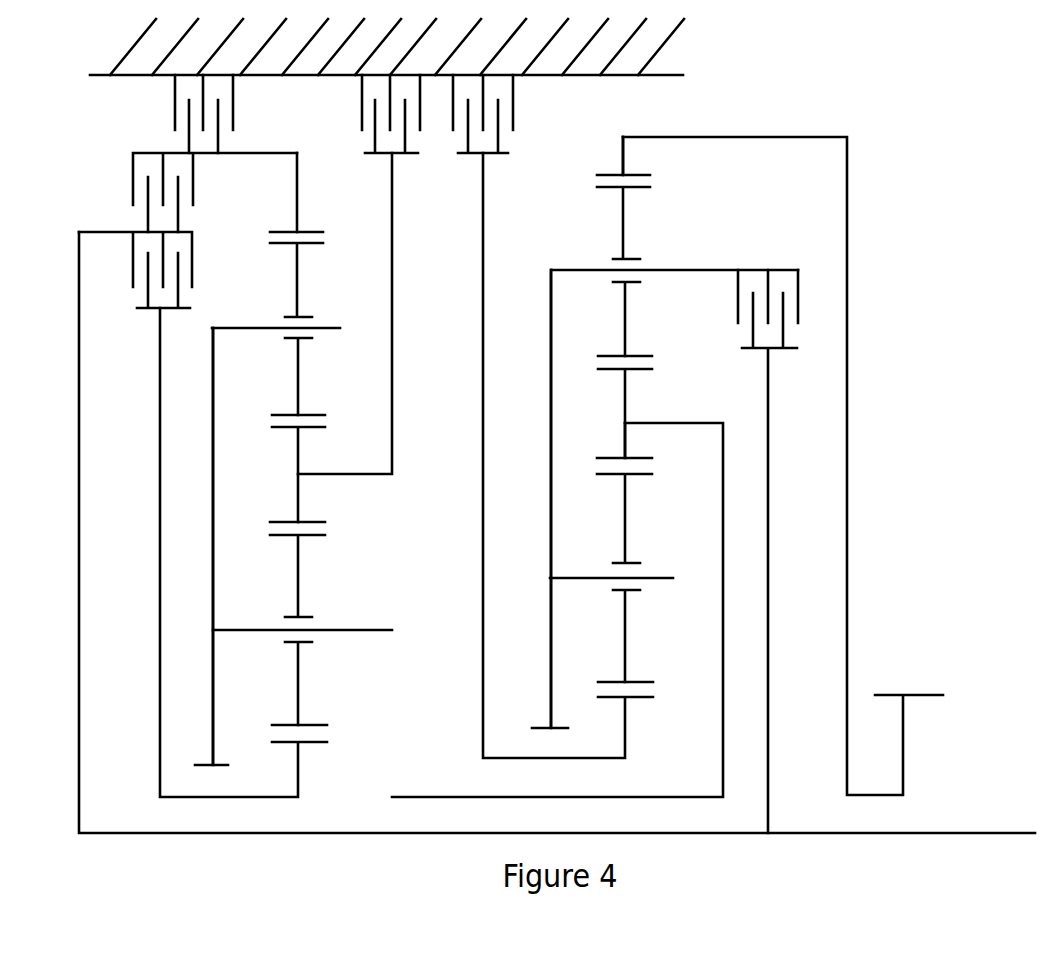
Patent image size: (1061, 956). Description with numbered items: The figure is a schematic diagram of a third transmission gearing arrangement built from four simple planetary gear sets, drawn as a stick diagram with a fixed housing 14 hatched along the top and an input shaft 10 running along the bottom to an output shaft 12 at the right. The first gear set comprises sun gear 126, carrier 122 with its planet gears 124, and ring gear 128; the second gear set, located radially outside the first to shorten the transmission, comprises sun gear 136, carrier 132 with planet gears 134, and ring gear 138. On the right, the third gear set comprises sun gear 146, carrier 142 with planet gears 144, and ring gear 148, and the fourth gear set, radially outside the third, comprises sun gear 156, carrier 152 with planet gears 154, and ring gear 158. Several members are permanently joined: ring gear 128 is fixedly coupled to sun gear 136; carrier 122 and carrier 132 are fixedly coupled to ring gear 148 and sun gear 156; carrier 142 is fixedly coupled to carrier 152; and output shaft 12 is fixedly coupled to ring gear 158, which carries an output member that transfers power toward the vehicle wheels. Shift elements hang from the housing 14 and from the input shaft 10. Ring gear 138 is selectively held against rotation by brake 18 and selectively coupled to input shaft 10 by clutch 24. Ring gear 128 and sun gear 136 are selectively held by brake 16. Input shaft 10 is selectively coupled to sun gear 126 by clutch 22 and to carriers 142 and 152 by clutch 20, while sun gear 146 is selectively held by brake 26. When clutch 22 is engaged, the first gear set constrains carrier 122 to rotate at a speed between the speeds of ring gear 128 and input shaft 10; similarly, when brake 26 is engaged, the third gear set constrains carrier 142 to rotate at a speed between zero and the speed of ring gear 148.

The input shaft 10 is at (992, 832).
The output shaft 12 is at (905, 693).
The housing 14 is at (660, 47).
The brake 16 is at (362, 107).
The brake 18 is at (175, 108).
The clutch 20 is at (757, 268).
The clutch 22 is at (132, 262).
The clutch 24 is at (132, 163).
The brake 26 is at (513, 103).
The carrier 122 is at (213, 540).
The gear 124 is at (298, 588).
The sun gear 126 is at (300, 787).
The ring gear 128 is at (298, 488).
The carrier 132 is at (189, 546).
The gear 134 is at (300, 290).
The sun gear 136 is at (298, 462).
The ring gear 138 is at (297, 192).
The carrier 142 is at (551, 430).
The gear 144 is at (625, 520).
The sun gear 146 is at (625, 740).
The ring gear 148 is at (625, 432).
The carrier 152 is at (524, 499).
The gear 154 is at (622, 235).
The sun gear 156 is at (625, 390).
The ring gear 158 is at (623, 150).